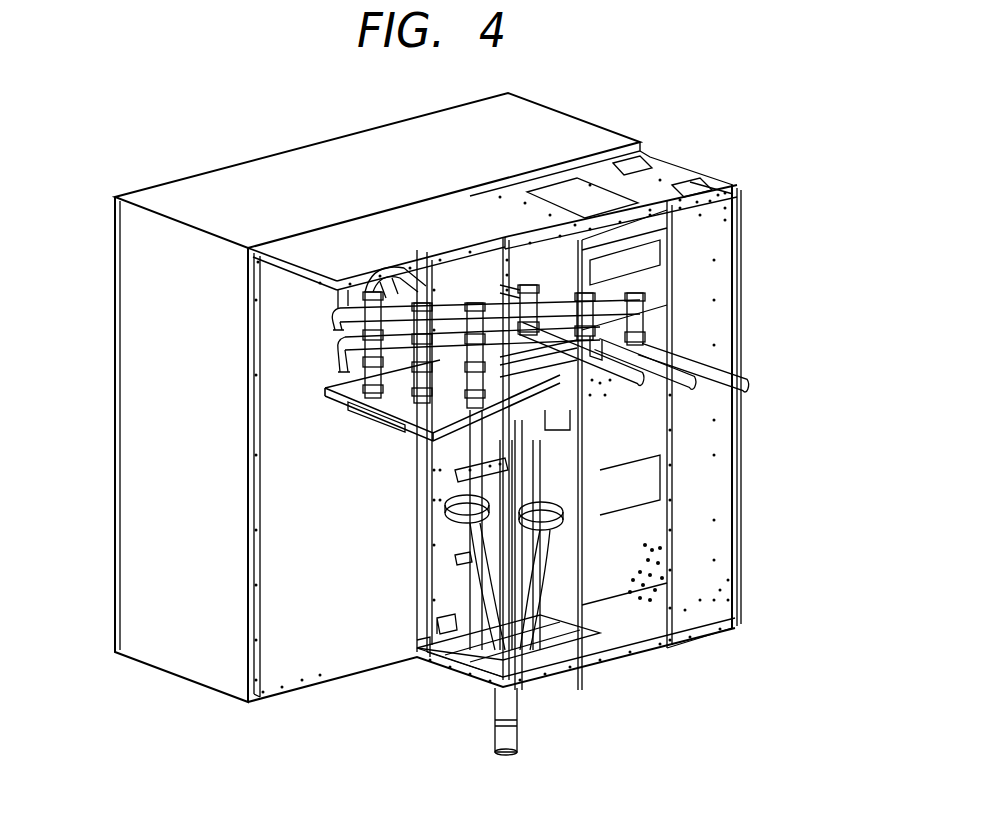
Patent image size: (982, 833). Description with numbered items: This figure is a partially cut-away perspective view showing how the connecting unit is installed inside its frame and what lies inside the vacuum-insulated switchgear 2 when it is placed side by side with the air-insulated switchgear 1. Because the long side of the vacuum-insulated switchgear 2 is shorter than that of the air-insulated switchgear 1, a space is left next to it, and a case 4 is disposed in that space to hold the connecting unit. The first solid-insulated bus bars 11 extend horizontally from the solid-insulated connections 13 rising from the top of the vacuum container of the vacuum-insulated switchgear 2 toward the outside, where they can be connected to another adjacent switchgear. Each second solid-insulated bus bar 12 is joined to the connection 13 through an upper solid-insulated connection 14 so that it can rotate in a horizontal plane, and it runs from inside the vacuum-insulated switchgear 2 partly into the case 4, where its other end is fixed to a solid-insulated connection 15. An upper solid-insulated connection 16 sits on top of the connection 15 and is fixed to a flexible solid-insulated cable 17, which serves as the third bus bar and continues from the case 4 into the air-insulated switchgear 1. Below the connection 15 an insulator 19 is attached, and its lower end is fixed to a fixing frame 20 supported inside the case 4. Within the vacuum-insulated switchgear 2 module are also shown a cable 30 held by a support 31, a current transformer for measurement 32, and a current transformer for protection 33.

The air-insulated switchgear 1 is at (553, 120).
The vacuum-insulated switchgear 2 is at (648, 483).
The case 4 is at (307, 243).
The first solid-insulated bus bar 11 is at (722, 358).
The second solid-insulated bus bar 12 is at (580, 292).
The solid-insulated connection 13 is at (660, 333).
The upper solid-insulated connection 14 is at (648, 300).
The solid-insulated connection 15 is at (372, 362).
The upper solid-insulated connection 16 is at (469, 302).
The solid-insulated cable 17 is at (396, 288).
The insulator 19 is at (360, 404).
The fixing frame 20 is at (408, 433).
The cable 30 is at (517, 705).
The support 31 is at (556, 490).
The current transformer for measurement 32 is at (587, 618).
The current transformer for protection 33 is at (573, 412).